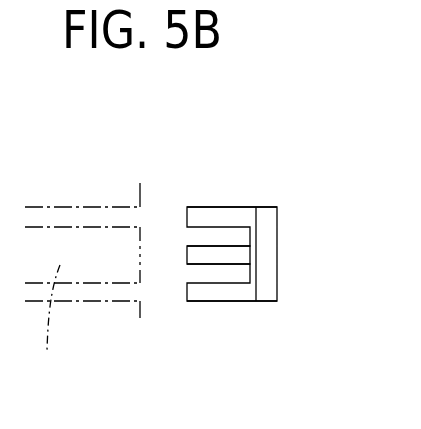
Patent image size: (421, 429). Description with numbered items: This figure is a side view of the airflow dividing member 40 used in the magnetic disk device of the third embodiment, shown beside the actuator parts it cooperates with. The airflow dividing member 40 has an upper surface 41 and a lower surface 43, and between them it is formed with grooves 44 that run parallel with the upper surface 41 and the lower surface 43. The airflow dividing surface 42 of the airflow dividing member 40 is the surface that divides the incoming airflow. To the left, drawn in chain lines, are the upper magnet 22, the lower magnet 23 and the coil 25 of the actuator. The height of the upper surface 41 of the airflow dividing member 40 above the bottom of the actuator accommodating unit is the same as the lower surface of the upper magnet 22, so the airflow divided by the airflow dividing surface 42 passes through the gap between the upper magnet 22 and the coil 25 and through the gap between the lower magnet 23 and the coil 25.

The upper magnet 22 is at (78, 196).
The lower magnet 23 is at (106, 307).
The coil 25 is at (45, 328).
The airflow dividing member 40 is at (236, 232).
The upper surface 41 is at (222, 207).
The airflow dividing surface 42 is at (230, 256).
The lower surface 43 is at (230, 301).
The grooves 44 is at (240, 238).